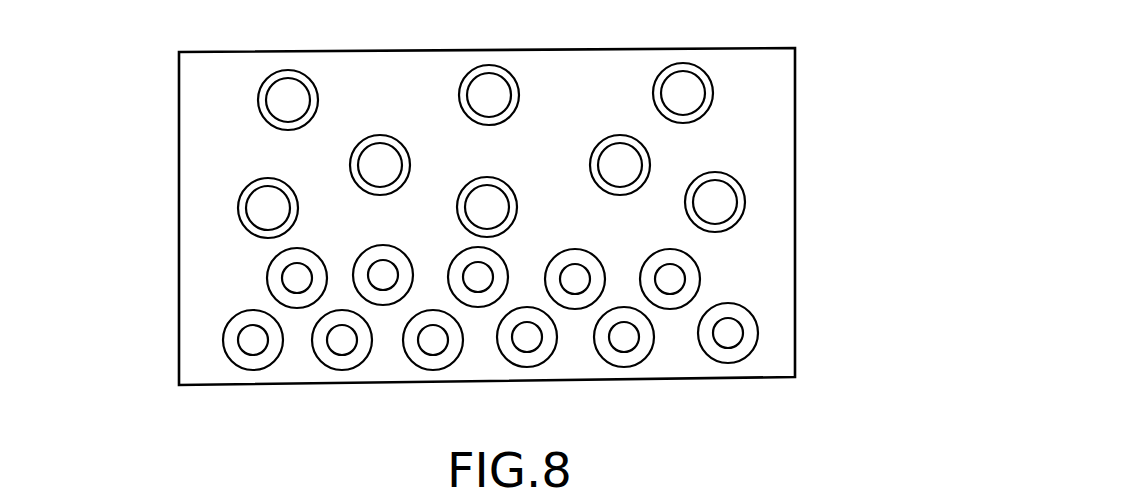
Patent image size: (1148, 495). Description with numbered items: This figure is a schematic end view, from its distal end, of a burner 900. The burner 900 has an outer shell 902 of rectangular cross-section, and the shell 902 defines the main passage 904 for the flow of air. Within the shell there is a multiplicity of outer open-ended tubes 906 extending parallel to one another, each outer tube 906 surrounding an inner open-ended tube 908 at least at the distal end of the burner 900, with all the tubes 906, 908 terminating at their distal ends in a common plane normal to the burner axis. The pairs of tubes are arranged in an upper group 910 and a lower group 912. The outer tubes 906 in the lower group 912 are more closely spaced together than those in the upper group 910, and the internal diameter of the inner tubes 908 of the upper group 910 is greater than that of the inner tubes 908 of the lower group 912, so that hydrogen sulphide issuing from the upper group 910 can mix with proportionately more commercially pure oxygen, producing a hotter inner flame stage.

The burner 900 is at (812, 302).
The outer shell 902 is at (796, 178).
The main passage 904 is at (208, 152).
The outer open-ended tube 906 is at (258, 96).
The inner open-ended tube 908 is at (280, 80).
The upper group 910 is at (446, 76).
The lower group 912 is at (253, 279).